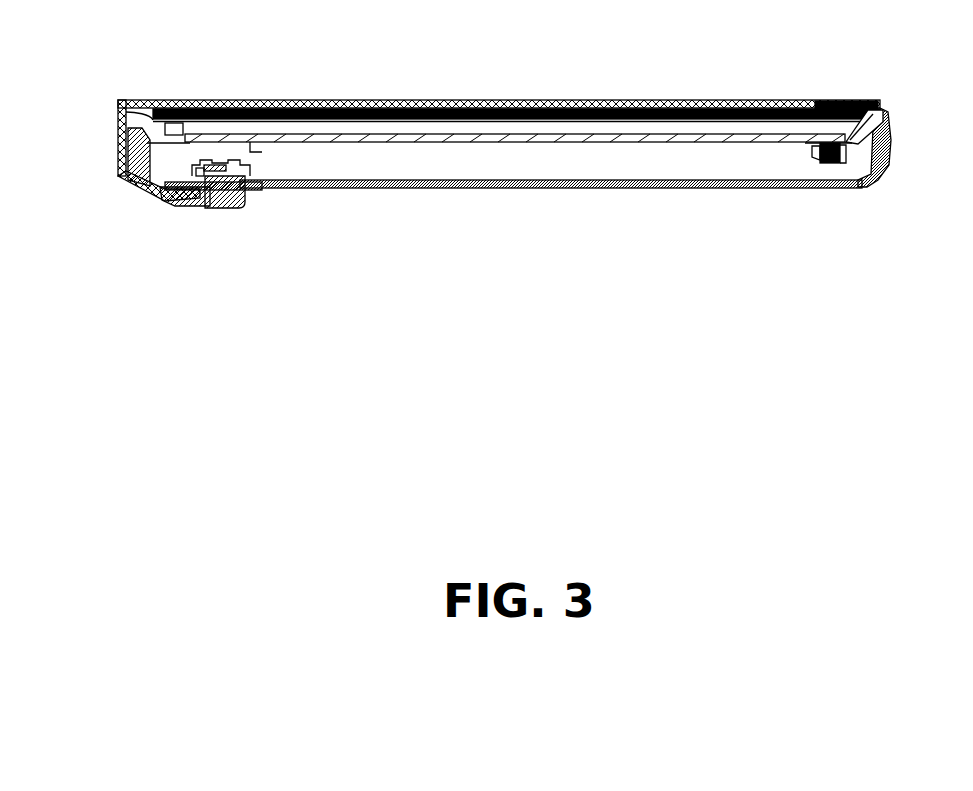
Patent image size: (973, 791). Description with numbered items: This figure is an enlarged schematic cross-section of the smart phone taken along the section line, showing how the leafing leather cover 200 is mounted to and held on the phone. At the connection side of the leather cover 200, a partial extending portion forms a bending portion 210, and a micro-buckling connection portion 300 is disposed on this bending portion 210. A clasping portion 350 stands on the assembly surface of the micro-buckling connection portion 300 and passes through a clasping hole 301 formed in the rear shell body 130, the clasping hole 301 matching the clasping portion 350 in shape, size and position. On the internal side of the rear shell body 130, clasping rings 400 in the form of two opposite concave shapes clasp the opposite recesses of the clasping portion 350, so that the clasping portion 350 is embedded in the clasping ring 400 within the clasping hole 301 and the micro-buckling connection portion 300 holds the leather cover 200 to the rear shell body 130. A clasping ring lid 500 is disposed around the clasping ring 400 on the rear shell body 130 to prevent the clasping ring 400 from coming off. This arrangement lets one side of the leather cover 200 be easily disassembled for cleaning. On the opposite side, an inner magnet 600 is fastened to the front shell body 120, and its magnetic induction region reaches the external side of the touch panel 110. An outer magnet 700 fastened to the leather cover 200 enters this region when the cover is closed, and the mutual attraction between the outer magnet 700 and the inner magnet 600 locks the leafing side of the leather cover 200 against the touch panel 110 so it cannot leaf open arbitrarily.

The touch panel 110 is at (723, 102).
The front shell body 120 is at (848, 140).
The rear shell body 130 is at (540, 190).
The leather cover 200 is at (533, 102).
The bending portion 210 is at (150, 187).
The micro-buckling connection portion 300 is at (183, 205).
The clasping hole 301 is at (202, 165).
The clasping portion 350 is at (217, 192).
The clasping ring 400 is at (248, 192).
The clasping ring lid 500 is at (237, 165).
The inner magnet 600 is at (827, 165).
The outer magnet 700 is at (830, 102).